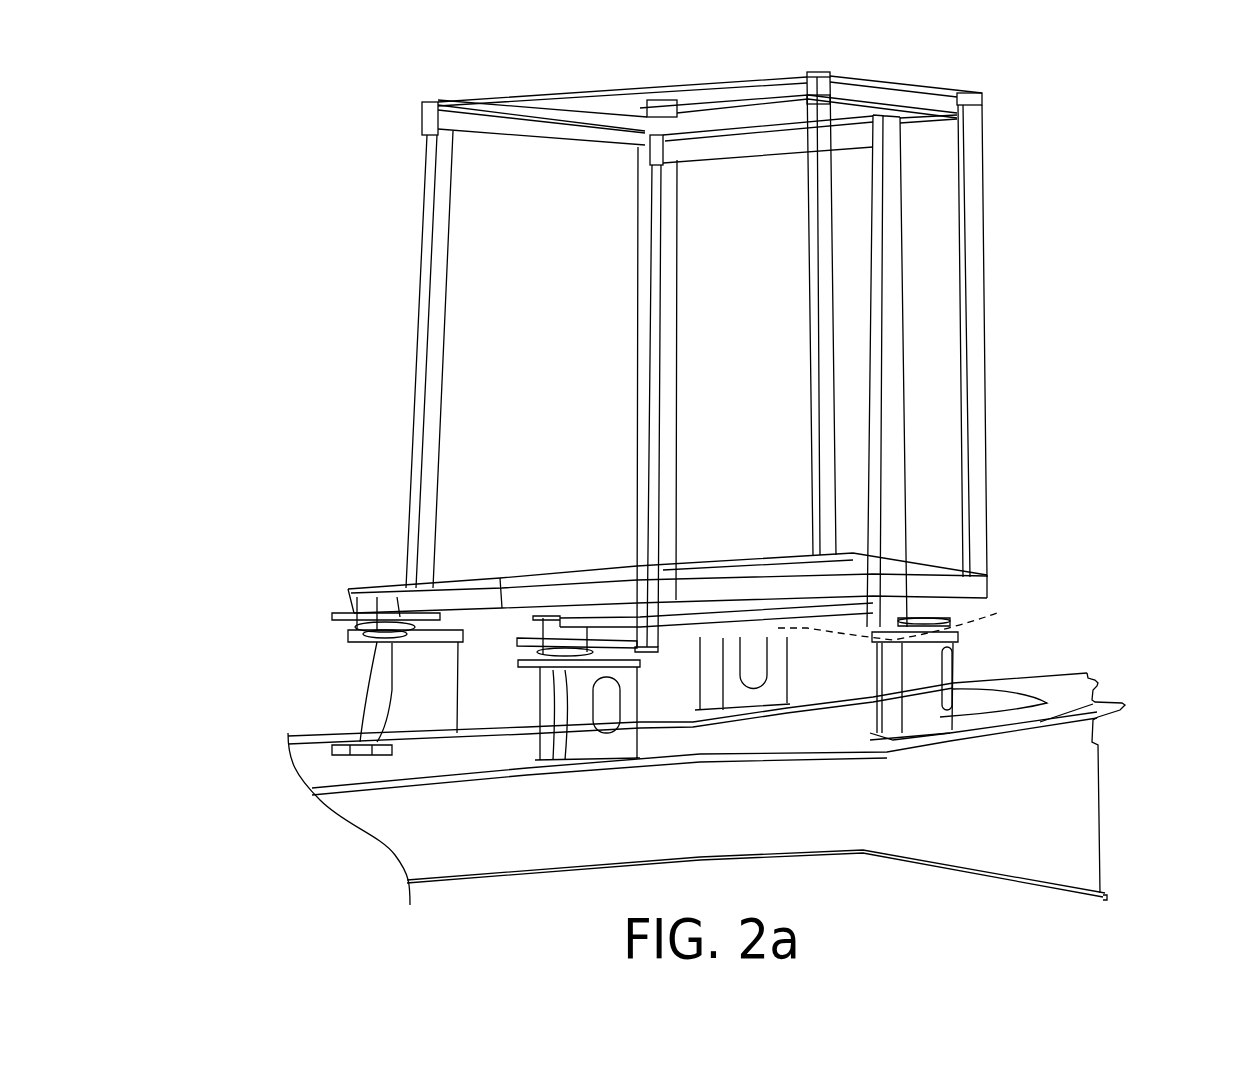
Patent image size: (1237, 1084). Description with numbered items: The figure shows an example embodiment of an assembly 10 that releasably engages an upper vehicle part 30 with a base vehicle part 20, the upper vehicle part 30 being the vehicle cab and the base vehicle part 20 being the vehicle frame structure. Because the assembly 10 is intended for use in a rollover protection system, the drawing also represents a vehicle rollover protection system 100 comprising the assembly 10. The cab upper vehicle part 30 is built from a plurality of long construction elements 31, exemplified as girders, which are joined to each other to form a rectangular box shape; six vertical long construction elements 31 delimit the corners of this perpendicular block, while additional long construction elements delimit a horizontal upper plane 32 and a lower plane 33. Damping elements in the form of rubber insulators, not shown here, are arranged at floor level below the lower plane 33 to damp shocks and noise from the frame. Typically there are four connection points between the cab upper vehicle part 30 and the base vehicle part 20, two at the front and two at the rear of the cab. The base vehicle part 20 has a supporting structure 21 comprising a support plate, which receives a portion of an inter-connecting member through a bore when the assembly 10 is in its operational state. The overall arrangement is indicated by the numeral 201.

The assembly 10 is at (400, 640).
The base vehicle part 20 is at (420, 822).
The supporting structure 21 is at (533, 717).
The upper vehicle part 30 is at (704, 344).
The long construction elements 31 is at (440, 200).
The horizontal upper plane 32 is at (565, 128).
The lower plane 33 is at (545, 598).
The vehicle rollover protection system 100 is at (312, 553).
The installation arrangement 201 is at (1100, 325).